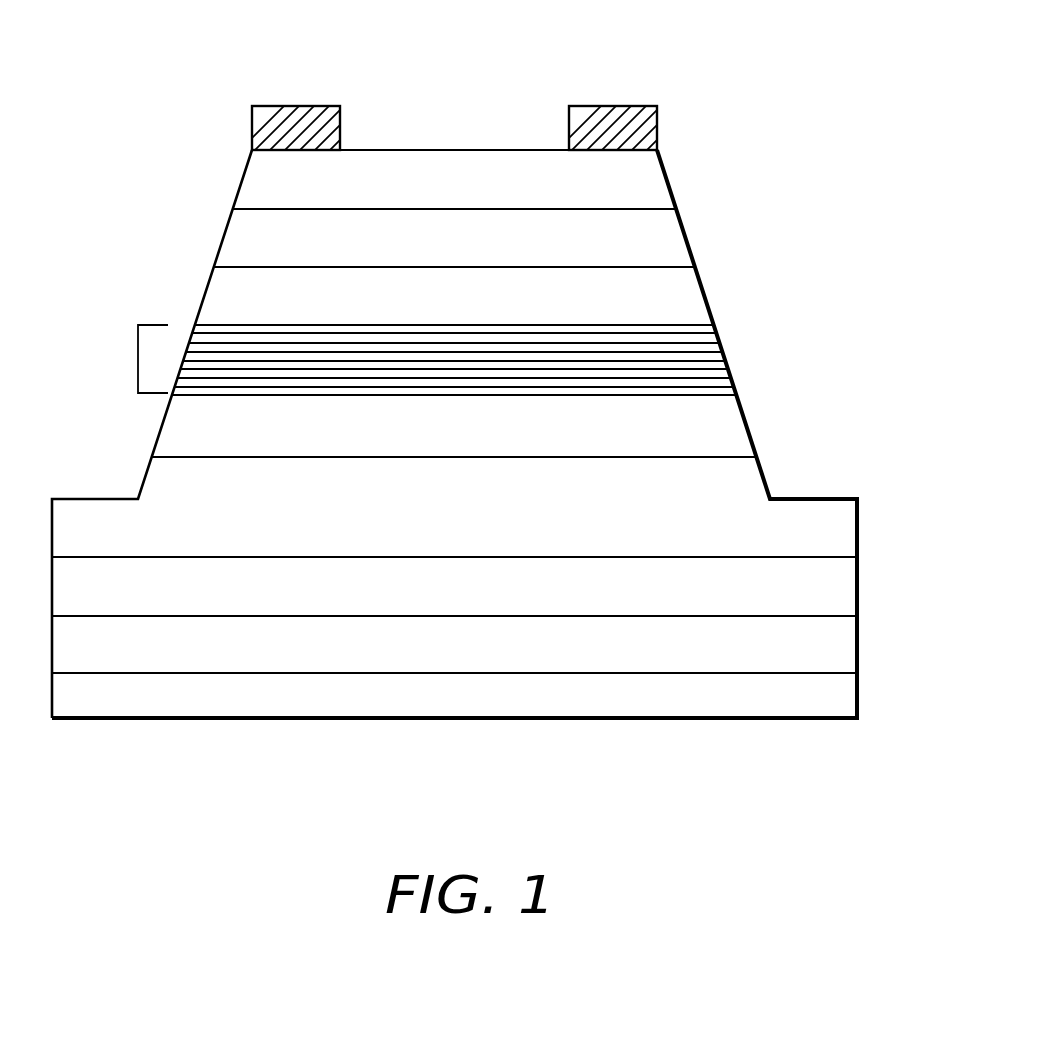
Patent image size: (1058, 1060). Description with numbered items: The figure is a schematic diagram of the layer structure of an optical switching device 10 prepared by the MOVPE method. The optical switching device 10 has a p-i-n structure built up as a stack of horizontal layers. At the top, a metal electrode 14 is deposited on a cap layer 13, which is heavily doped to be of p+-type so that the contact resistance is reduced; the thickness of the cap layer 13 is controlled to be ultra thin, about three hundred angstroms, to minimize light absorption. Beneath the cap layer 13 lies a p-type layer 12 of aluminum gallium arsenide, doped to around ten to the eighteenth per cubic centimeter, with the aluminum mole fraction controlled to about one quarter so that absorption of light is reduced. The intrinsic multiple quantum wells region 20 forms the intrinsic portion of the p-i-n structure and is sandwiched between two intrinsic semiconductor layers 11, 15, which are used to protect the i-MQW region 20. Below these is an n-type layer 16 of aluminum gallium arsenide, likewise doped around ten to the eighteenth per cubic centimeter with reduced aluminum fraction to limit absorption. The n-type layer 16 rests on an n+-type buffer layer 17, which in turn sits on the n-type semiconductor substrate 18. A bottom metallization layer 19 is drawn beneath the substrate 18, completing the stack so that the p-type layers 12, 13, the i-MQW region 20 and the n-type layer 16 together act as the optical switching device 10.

The optical switching device 10 is at (438, 48).
The metal electrode 14 is at (295, 106).
The cap layer 13 is at (642, 182).
The p-type layer 12 is at (655, 240).
The intrinsic semiconductor layer 11 is at (668, 301).
The intrinsic multiple quantum wells region 20 is at (712, 374).
The intrinsic semiconductor layer 15 is at (712, 431).
The n-type layer 16 is at (813, 517).
The n+-type buffer layer 17 is at (827, 588).
The n-type semiconductor substrate 18 is at (827, 647).
The AuGe/Ni electrode 19 is at (828, 703).